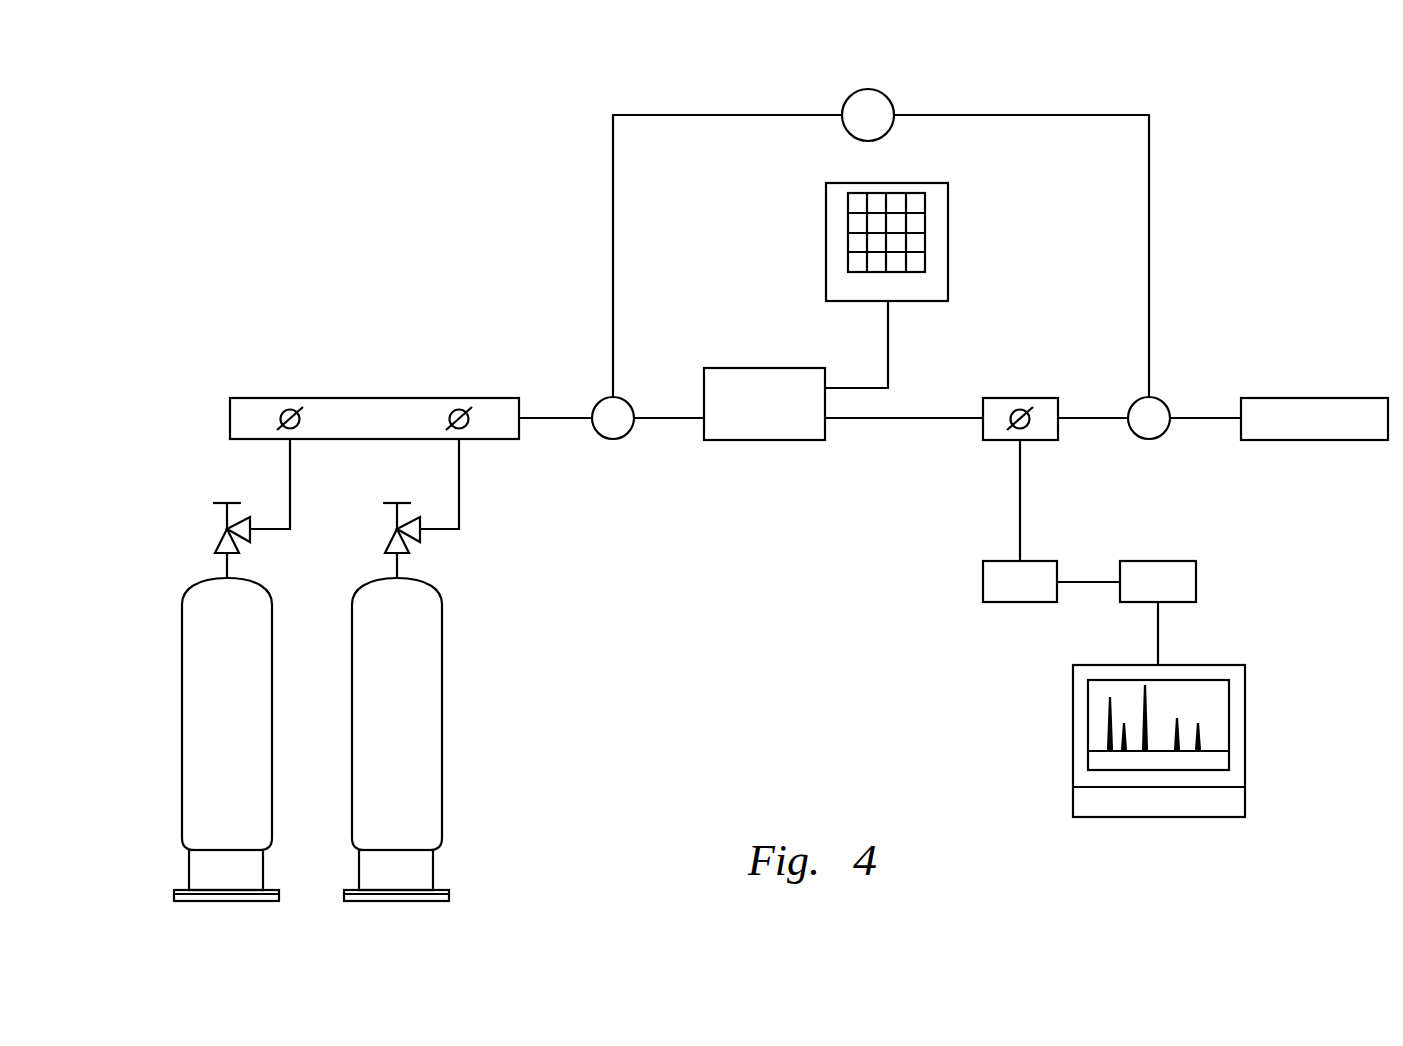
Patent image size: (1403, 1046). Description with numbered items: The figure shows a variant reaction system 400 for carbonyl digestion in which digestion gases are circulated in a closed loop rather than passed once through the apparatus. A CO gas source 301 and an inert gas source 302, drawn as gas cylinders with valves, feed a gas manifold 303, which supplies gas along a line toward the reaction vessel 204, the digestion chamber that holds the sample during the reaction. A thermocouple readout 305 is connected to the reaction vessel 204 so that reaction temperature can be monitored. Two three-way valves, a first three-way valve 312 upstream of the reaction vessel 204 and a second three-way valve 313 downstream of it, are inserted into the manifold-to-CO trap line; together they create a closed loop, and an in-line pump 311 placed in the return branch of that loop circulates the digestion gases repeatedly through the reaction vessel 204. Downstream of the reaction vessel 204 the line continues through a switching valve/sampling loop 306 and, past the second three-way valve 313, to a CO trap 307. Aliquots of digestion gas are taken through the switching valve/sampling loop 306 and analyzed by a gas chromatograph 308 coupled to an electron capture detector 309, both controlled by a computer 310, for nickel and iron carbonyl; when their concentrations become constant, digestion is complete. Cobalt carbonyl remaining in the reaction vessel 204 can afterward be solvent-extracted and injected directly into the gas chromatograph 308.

The variant reaction system 400 is at (1303, 178).
The CO gas source 301 is at (182, 655).
The inert gas source 302 is at (442, 655).
The gas manifold 303 is at (374, 398).
The 3-way valve 312 is at (613, 439).
The reaction vessel 204 is at (765, 368).
The thermocouple readout 305 is at (826, 222).
The in-line pump 311 is at (886, 96).
The switching valve/sampling loop 306 is at (1022, 398).
The 3-way valve 313 is at (1151, 440).
The CO trap 307 is at (1313, 398).
The gas chromatograph 308 is at (983, 582).
The electron capture detector 309 is at (1196, 578).
The computer 310 is at (1245, 718).